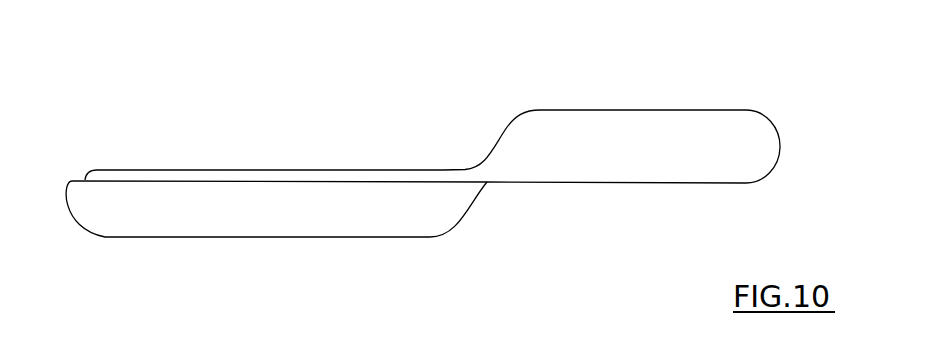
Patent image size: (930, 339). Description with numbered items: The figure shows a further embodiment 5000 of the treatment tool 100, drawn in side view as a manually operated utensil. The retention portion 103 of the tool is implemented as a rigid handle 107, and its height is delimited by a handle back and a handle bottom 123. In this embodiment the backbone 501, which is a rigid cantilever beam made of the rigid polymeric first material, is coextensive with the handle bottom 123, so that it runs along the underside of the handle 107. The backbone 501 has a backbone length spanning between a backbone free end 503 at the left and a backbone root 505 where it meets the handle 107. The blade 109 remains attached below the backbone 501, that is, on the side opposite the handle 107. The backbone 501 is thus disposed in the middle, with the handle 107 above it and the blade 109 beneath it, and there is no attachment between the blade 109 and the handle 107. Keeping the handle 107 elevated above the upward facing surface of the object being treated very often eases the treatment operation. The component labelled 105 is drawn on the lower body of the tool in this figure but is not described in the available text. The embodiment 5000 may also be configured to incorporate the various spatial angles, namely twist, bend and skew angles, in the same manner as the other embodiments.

The embodiment 5000 is at (377, 92).
The treatment tool 100 is at (308, 123).
The retention portion 103 is at (612, 85).
The lower body member 105 is at (125, 125).
The handle 107 is at (682, 120).
The blade 109 is at (165, 223).
The handle bottom 123 is at (587, 183).
The backbone 501 is at (280, 172).
The backbone free end 503 is at (102, 177).
The backbone root 505 is at (467, 172).